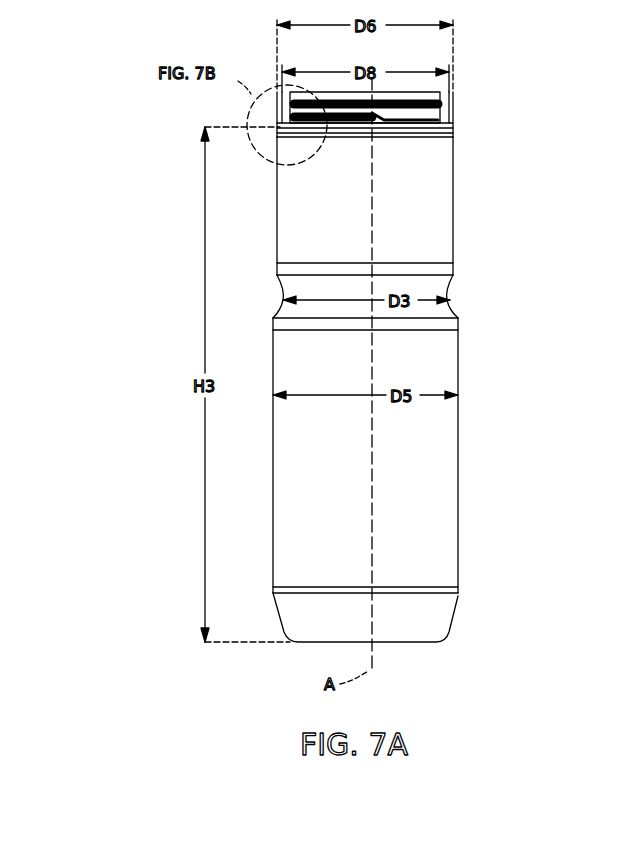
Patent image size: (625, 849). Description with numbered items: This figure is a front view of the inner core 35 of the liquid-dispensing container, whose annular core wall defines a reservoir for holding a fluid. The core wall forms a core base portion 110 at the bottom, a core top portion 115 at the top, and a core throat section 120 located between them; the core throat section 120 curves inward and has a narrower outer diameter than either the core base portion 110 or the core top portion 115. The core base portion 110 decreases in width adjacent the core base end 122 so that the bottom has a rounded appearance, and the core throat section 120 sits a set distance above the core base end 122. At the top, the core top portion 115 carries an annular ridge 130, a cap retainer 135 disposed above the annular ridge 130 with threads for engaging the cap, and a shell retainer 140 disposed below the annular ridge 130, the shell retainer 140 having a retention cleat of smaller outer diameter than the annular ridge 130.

The inner core 35 is at (106, 46).
The core base portion 110 is at (456, 418).
The core top portion 115 is at (454, 216).
The core throat section 120 is at (452, 286).
The core base end 122 is at (404, 645).
The annular ridge 130 is at (454, 126).
The cap retainer 135 is at (454, 97).
The shell retainer 140 is at (421, 135).